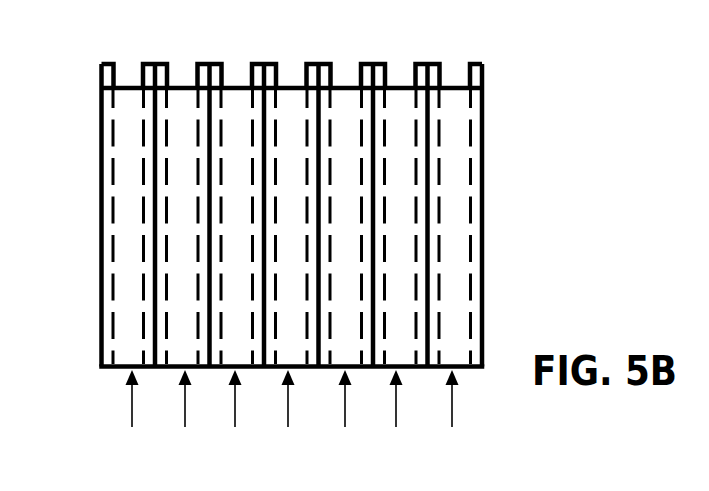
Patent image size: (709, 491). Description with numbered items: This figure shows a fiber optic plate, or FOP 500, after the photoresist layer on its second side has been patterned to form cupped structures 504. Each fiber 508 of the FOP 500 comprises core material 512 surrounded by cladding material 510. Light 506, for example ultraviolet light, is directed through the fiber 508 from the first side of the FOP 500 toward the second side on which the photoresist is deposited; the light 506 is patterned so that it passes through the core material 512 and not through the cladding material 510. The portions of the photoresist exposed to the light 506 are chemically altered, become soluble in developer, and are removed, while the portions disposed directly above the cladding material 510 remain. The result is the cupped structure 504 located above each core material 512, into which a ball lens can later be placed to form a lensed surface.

The FOP 500 is at (528, 132).
The cupped structure 504 is at (129, 56).
The light 506 is at (273, 402).
The fiber 508 is at (99, 162).
The cladding material 510 is at (90, 257).
The core material 512 is at (115, 335).